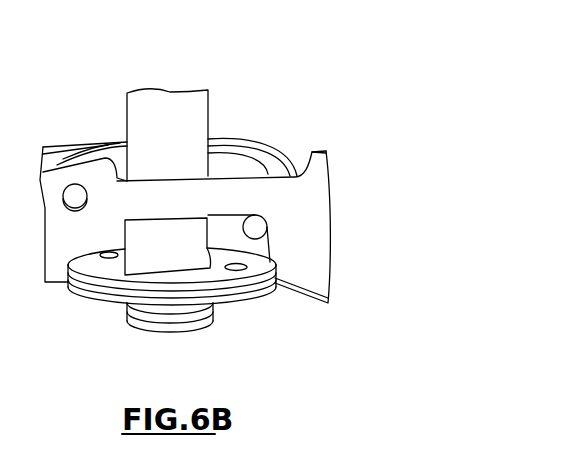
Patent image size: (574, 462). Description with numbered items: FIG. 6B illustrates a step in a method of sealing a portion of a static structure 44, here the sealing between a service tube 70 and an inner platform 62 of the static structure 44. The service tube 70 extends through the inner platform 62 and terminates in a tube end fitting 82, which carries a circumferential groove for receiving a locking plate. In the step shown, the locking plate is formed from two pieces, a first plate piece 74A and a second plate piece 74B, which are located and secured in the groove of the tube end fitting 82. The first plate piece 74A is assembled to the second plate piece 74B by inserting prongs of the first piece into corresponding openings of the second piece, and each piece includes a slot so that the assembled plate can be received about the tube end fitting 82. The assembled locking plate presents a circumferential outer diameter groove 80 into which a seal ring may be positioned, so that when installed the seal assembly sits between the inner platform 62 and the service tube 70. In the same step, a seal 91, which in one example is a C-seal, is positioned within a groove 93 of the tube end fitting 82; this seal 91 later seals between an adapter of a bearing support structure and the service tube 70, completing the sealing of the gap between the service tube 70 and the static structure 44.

The static structure 44 is at (298, 63).
The inner platform 62 is at (317, 207).
The service tube 70 is at (190, 123).
The first plate piece 74A is at (252, 262).
The second plate piece 74B is at (233, 285).
The outer diameter groove 80 is at (103, 283).
The tube end fitting 82 is at (160, 330).
The seal 91 is at (198, 312).
The groove 93 is at (137, 323).